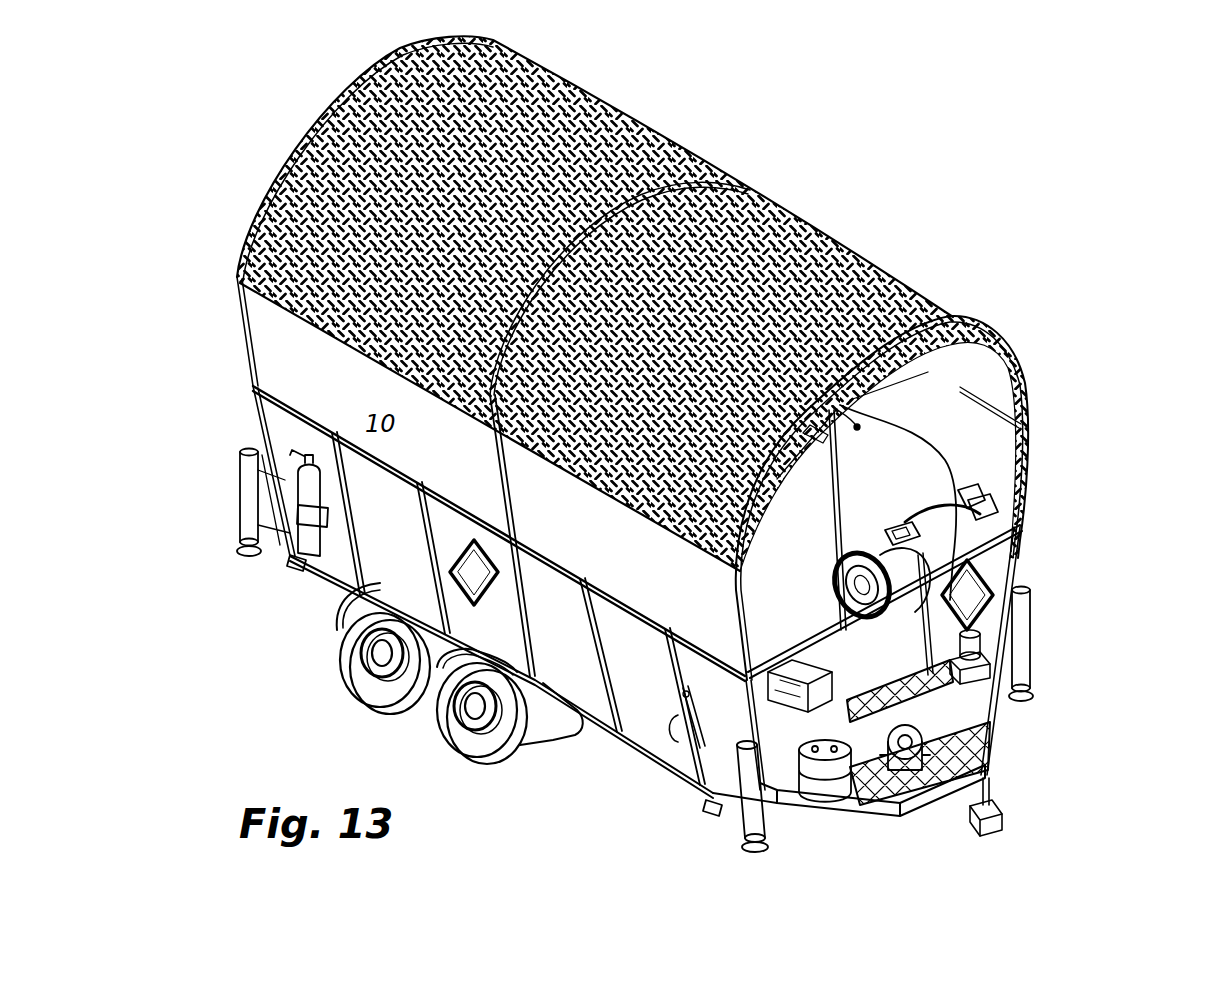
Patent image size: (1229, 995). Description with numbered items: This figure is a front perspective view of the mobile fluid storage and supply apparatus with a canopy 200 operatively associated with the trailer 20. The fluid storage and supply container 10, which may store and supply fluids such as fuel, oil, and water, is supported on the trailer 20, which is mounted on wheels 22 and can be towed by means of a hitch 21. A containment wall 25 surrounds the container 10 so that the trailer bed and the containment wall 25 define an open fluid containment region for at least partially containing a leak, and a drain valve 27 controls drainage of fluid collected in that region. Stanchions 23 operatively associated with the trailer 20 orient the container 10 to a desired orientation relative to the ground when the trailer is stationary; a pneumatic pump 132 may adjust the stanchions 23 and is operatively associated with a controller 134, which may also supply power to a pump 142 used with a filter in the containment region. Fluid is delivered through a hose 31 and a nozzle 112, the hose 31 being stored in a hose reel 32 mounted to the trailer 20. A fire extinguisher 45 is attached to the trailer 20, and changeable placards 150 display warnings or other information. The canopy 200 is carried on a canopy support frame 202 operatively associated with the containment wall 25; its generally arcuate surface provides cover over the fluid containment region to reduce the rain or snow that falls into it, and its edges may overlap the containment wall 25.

The fluid storage and supply container 10 is at (501, 533).
The trailer 20 is at (1032, 551).
The hitch 21 is at (1000, 812).
The wheels 22 is at (397, 697).
The stanchions 23 is at (243, 508).
The containment wall 25 is at (643, 718).
The drain valve 27 is at (296, 567).
The hose 31 is at (950, 486).
The hose reel 32 is at (880, 540).
The fire extinguisher 45 is at (313, 548).
The nozzle 112 is at (1018, 540).
The pneumatic pump 132 is at (988, 743).
The controller 134 is at (815, 688).
The pump 142 is at (992, 648).
The changeable placard 150 is at (515, 580).
The canopy 200 is at (807, 278).
The canopy support frame 202 is at (1042, 436).